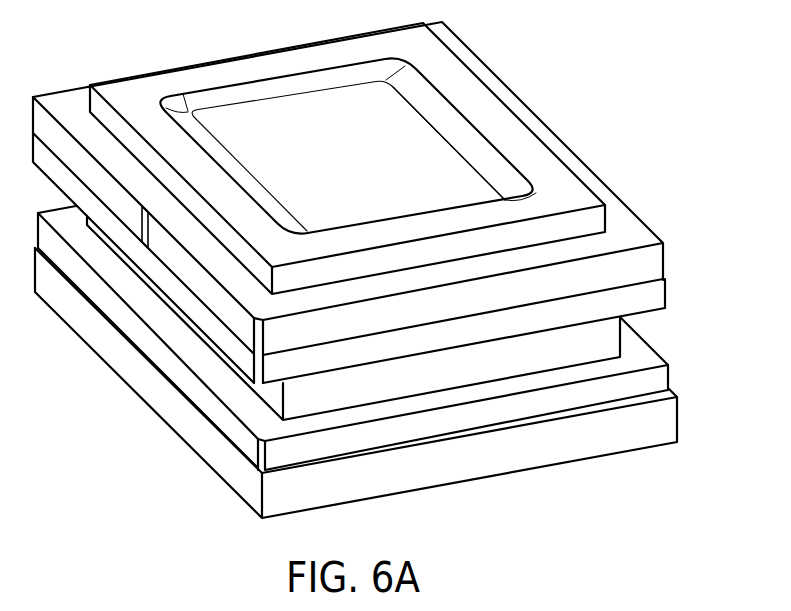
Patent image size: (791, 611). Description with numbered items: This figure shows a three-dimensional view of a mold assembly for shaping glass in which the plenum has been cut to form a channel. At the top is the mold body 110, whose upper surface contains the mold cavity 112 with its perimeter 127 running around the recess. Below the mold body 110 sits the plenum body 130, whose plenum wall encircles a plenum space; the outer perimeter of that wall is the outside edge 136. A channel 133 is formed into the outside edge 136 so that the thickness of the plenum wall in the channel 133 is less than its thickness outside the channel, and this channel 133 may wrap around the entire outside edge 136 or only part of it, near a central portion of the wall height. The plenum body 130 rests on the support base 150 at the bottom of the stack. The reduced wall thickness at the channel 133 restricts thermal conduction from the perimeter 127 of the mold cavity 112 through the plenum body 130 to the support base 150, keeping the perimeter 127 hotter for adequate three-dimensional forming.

The mold body 110 is at (666, 262).
The mold cavity 112 is at (296, 97).
The perimeter of the mold cavity 127 is at (496, 147).
The plenum body 130 is at (668, 372).
The channel 133 is at (453, 373).
The outside edge of the plenum wall 136 is at (662, 294).
The support base 150 is at (678, 416).